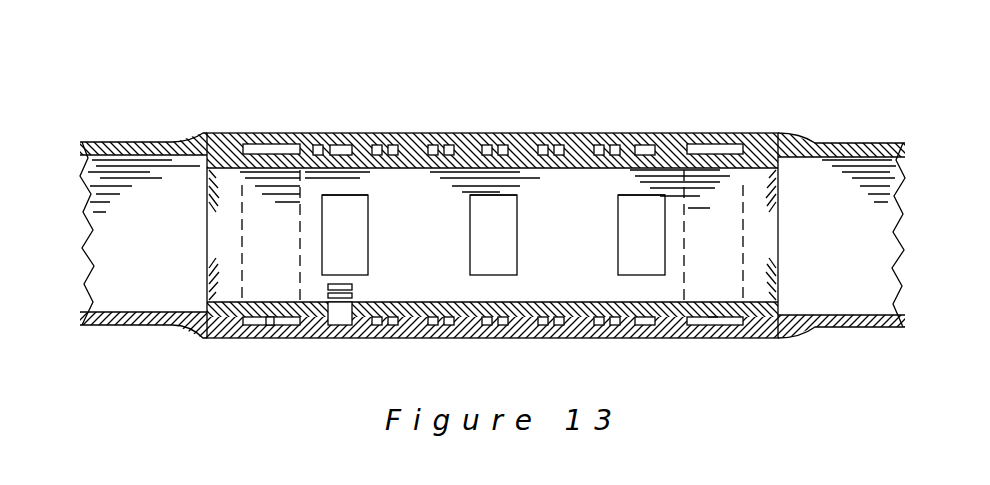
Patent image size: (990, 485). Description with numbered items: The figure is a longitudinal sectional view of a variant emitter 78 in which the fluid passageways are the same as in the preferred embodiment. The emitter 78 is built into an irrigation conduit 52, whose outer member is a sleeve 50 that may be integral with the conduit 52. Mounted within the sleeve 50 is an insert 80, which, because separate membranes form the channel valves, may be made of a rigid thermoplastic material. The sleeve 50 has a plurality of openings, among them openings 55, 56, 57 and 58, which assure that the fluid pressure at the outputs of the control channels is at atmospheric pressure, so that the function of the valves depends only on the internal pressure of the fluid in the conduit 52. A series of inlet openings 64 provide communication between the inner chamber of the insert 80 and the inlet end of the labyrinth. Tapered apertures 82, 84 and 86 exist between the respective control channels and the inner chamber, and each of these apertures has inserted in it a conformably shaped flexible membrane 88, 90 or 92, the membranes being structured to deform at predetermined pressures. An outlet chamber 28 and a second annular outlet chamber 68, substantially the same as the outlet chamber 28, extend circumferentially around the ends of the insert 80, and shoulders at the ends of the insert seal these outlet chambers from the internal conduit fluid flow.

The emitter 78 is at (492, 210).
The irrigation conduit 52 is at (127, 145).
The opening 57 is at (273, 137).
The sleeve 50 is at (492, 206).
The opening 55 is at (723, 140).
The insert 80 is at (592, 172).
The flexible membrane 92 is at (347, 210).
The flexible membrane 90 is at (487, 228).
The flexible membrane 88 is at (630, 224).
The tapered aperture 86 is at (364, 244).
The tapered aperture 84 is at (516, 252).
The tapered aperture 82 is at (621, 262).
The inlet openings 64 is at (353, 300).
The second annular outlet chamber 68 is at (271, 322).
The outlet chamber 28 is at (714, 320).
The opening 58 is at (272, 338).
The opening 56 is at (717, 336).